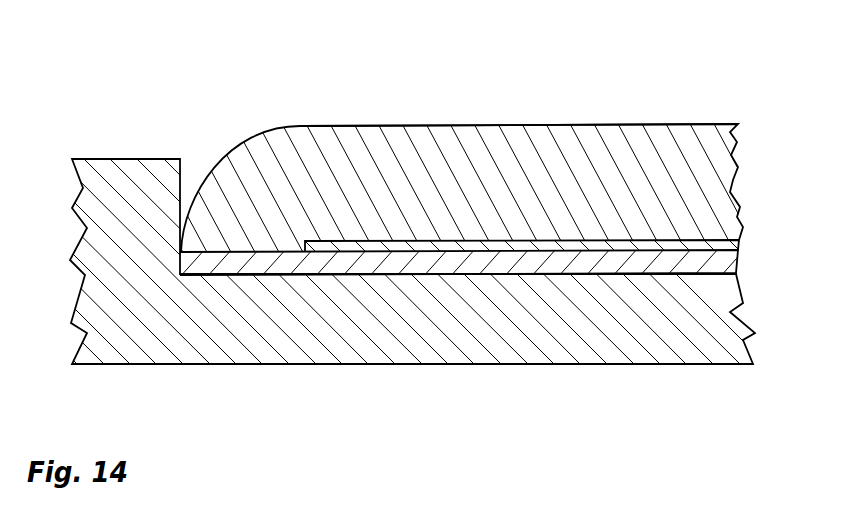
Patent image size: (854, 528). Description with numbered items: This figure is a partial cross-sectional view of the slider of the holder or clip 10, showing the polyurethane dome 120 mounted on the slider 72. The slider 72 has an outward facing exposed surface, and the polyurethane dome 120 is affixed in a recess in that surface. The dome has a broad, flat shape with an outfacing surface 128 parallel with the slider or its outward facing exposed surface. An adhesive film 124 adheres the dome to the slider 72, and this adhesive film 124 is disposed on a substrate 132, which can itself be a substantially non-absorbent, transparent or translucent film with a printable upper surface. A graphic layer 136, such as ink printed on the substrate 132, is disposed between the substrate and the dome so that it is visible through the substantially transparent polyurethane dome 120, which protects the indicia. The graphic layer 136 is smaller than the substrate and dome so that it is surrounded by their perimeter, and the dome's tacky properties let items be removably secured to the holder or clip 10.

The holder or clip 10 is at (137, 66).
The slider 72 is at (208, 365).
The polyurethane dome 120 is at (343, 124).
The adhesive film 124 is at (517, 274).
The outfacing surface 128 is at (447, 125).
The substrate 132 is at (739, 267).
The graphic layer 136 is at (695, 240).